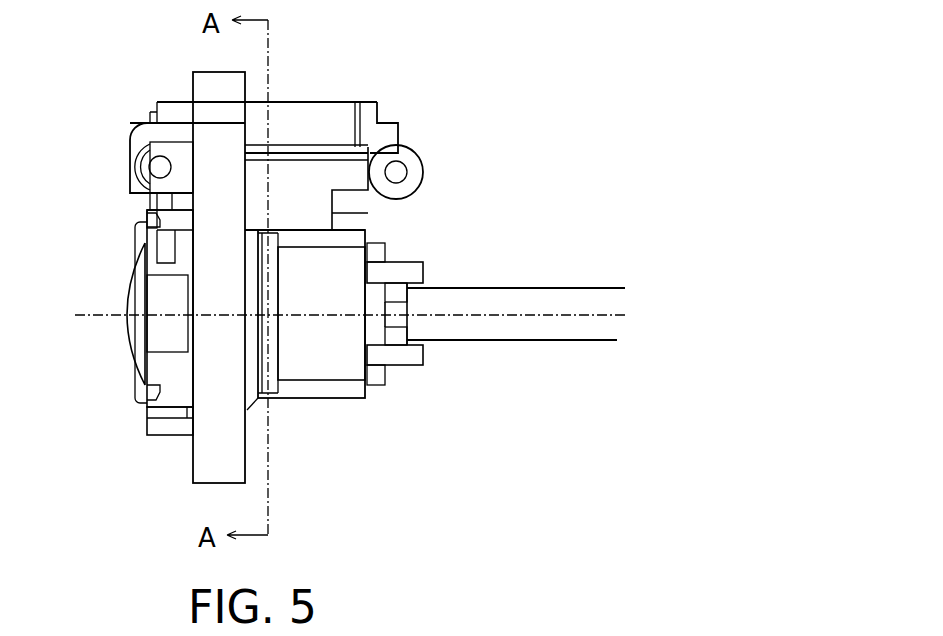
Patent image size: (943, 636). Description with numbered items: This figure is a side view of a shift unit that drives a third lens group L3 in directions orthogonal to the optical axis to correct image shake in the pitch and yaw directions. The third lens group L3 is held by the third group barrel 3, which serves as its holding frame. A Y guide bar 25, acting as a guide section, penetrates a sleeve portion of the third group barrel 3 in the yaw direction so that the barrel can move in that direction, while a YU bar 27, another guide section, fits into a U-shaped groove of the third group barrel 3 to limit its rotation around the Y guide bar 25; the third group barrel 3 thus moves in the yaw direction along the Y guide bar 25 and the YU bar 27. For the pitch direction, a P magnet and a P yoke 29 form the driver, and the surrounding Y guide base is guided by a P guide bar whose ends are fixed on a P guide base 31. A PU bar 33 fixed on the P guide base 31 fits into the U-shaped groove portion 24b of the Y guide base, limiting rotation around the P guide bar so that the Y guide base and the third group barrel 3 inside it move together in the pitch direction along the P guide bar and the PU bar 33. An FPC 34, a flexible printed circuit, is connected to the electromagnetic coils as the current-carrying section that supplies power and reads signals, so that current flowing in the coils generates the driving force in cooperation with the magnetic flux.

The P guide base 31 is at (207, 88).
The FPC 34 is at (133, 128).
The Y guide bar 25 is at (122, 160).
The YU bar 27 is at (399, 170).
The third group barrel 3 is at (170, 398).
The third lens group L3 is at (130, 297).
The P yoke 29 is at (335, 360).
The PU bar 33 is at (400, 333).
The U-shaped groove portion 24b is at (392, 320).